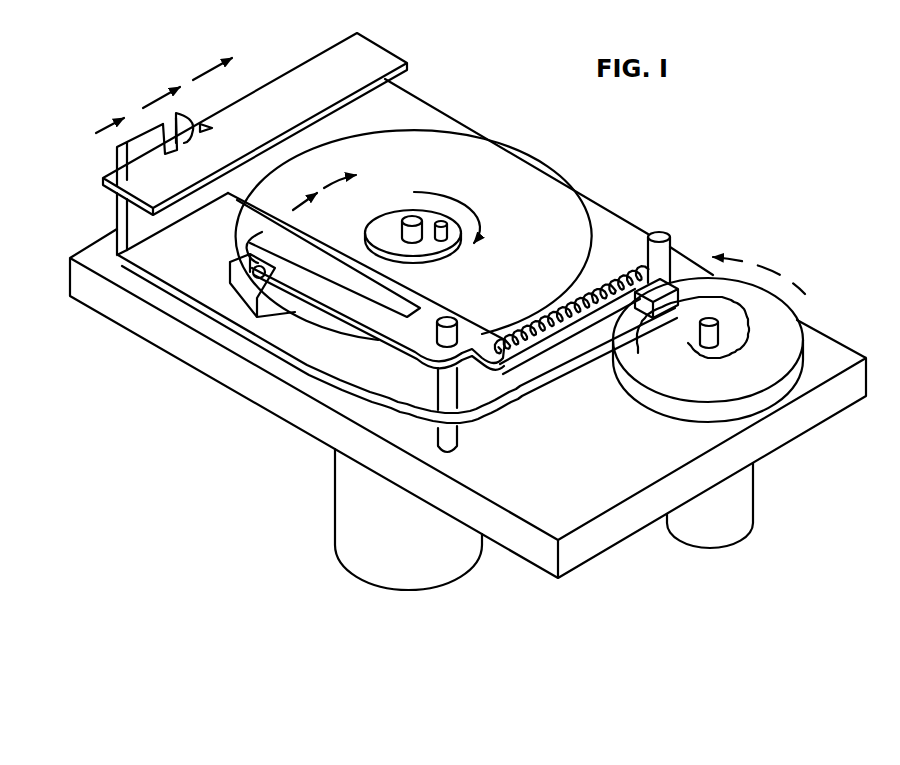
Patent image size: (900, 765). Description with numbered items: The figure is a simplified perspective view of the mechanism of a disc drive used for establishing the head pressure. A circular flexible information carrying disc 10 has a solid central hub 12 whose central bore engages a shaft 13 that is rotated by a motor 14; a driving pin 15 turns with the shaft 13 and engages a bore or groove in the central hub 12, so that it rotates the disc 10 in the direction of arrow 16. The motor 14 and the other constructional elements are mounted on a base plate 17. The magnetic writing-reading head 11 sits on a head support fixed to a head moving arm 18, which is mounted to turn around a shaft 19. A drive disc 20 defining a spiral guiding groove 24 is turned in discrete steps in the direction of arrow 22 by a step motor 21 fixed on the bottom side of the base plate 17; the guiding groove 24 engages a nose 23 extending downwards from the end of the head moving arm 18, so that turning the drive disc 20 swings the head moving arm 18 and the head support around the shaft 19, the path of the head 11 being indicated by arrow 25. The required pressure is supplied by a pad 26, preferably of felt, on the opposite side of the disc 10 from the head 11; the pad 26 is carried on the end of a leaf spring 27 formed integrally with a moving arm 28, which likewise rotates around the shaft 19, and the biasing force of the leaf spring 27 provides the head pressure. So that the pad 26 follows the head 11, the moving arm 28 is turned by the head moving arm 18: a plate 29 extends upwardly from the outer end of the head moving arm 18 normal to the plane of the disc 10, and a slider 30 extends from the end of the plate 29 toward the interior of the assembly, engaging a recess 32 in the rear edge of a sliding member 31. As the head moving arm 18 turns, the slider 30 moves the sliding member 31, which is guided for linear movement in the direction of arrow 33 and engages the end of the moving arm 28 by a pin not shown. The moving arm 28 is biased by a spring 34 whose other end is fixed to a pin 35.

The flexible information carrying disc 10 is at (488, 158).
The magnetic head 11 is at (253, 290).
The central hub 12 is at (382, 217).
The shaft 13 is at (411, 216).
The motor 14 is at (458, 568).
The driving pin 15 is at (444, 225).
The arrow 16 is at (481, 228).
The base plate 17 is at (585, 542).
The head moving arm 18 is at (347, 368).
The shaft 19 is at (452, 436).
The drive disc 20 is at (778, 332).
The step motor 21 is at (735, 515).
The arrow 22 is at (735, 257).
The nose 23 is at (675, 306).
The spiral guiding groove 24 is at (747, 352).
The arrow 25 is at (332, 184).
The pad 26 is at (253, 271).
The leaf spring 27 is at (327, 290).
The moving arm 28 is at (250, 193).
The plate 29 is at (137, 138).
The slider 30 is at (190, 120).
The sliding member 31 is at (362, 52).
The recess 32 is at (168, 142).
The arrow 33 is at (96, 133).
The spring 34 is at (604, 288).
The pin 35 is at (659, 233).